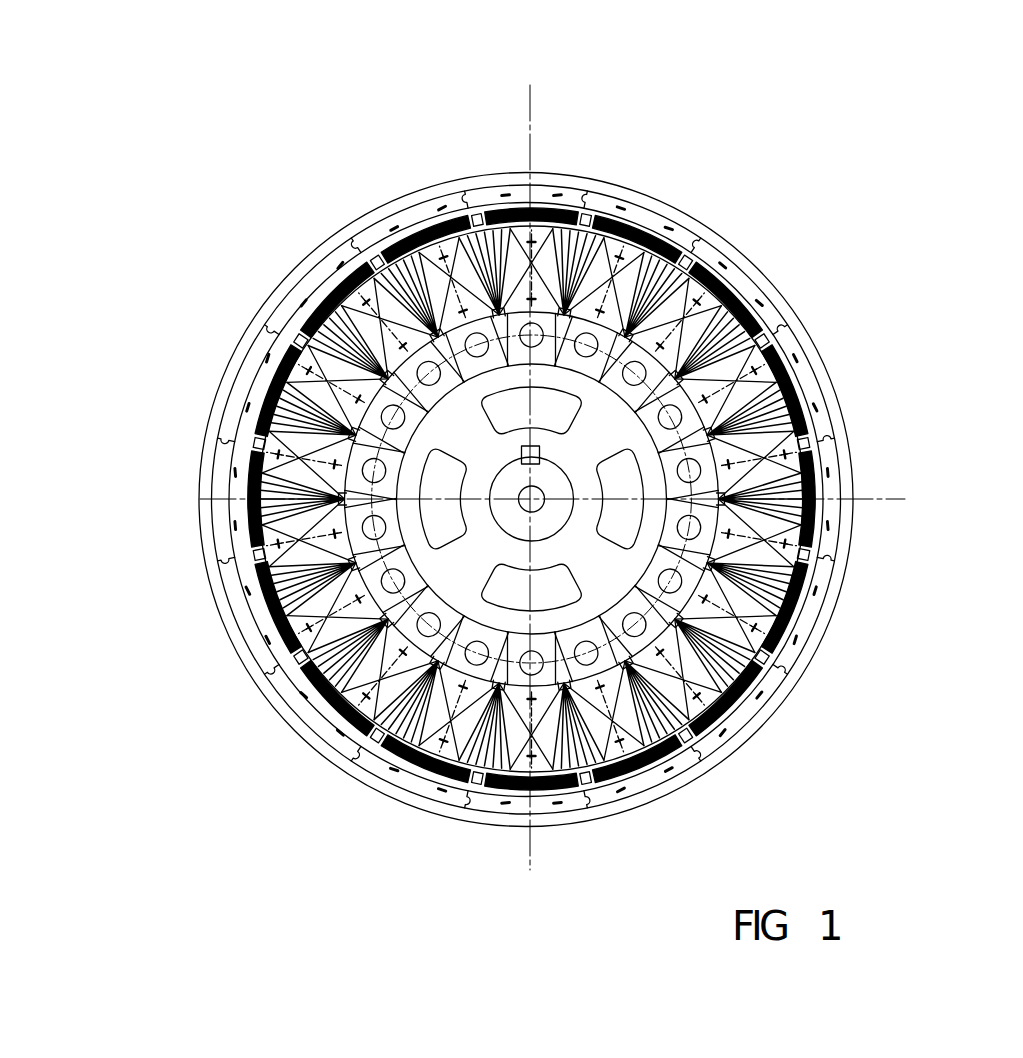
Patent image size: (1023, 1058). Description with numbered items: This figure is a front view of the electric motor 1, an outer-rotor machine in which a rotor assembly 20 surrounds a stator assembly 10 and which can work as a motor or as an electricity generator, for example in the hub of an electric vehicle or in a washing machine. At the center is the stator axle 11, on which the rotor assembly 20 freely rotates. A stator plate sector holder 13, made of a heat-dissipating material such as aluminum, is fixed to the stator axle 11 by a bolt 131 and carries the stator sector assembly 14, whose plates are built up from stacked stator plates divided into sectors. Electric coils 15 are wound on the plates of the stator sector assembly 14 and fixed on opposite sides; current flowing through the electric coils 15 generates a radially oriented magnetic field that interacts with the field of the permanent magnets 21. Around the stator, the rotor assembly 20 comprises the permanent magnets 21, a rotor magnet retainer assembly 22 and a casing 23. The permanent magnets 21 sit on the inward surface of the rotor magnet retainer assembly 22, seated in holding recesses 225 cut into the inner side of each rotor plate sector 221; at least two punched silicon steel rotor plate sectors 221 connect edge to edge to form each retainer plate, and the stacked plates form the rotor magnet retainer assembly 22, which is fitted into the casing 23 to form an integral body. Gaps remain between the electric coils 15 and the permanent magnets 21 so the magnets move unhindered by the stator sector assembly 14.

The electric motor 1 is at (858, 293).
The stator assembly 10 is at (767, 618).
The stator axle 11 is at (555, 522).
The stator plate sector holder 13 is at (463, 583).
The bolt 131 is at (522, 455).
The stator sector assembly 14 is at (275, 568).
The electric coils 15 is at (272, 618).
The rotor assembly 20 is at (750, 255).
The permanent magnets 21 is at (517, 200).
The rotor magnet retainer assembly 22 is at (668, 205).
The rotor plate sector 221 is at (420, 212).
The holding recesses 225 is at (337, 293).
The casing 23 is at (368, 217).